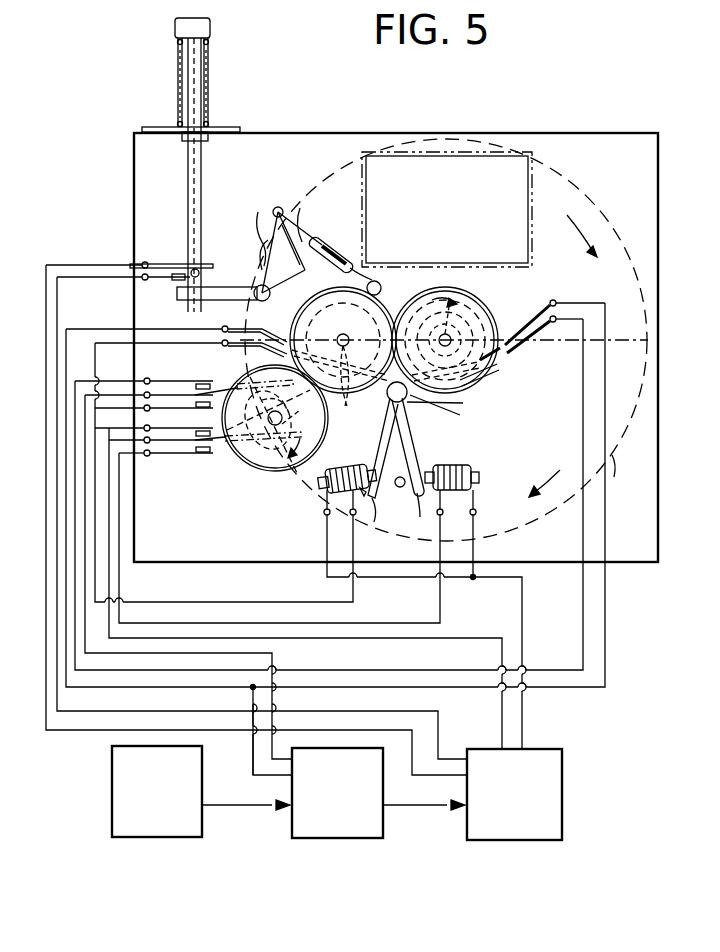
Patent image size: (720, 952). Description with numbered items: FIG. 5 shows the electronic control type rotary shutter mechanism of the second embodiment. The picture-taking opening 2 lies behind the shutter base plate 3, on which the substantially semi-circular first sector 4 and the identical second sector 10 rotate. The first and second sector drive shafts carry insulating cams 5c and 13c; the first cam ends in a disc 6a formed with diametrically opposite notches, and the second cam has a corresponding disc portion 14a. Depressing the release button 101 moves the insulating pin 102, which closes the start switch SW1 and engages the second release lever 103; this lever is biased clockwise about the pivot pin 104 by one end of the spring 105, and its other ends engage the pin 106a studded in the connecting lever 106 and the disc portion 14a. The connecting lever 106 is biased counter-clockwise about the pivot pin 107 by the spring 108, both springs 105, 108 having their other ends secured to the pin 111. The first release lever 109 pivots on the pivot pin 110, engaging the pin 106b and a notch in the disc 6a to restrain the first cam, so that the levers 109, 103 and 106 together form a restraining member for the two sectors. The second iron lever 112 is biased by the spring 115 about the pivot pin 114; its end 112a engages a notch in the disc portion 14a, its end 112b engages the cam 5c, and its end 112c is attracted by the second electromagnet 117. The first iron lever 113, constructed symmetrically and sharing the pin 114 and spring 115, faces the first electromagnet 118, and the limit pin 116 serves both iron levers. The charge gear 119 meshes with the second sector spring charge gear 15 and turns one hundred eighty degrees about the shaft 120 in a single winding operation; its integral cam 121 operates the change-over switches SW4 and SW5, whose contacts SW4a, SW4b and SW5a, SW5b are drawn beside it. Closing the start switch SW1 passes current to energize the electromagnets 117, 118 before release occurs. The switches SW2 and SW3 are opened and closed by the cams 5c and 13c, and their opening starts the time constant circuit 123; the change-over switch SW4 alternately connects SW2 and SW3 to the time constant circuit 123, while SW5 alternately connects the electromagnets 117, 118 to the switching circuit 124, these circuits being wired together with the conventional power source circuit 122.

The picture-taking opening 2 is at (448, 160).
The shutter base plate 3 is at (580, 148).
The first sector 4 is at (575, 198).
The insulating cam 5c is at (485, 330).
The disc 6a is at (448, 330).
The second sector 10 is at (616, 480).
The insulating cam 13c is at (385, 290).
The disc portion 14a is at (262, 302).
The second sector spring charge gear 15 is at (292, 428).
The release button 101 is at (175, 29).
The insulating pin 102 is at (189, 212).
The second release lever 103 is at (177, 292).
The pivot pin 104 is at (206, 266).
The spring 105 is at (268, 244).
The connecting lever 106 is at (265, 215).
The pin 106a is at (262, 253).
The pin 106b is at (302, 238).
The pivot pin 107 is at (277, 207).
The spring 108 is at (285, 208).
The first release lever 109 is at (335, 260).
The pivot pin 110 is at (374, 280).
The pin 111 is at (292, 260).
The second iron lever 112 is at (412, 428).
The end of second iron lever 112a is at (384, 430).
The end of second iron lever 112b is at (486, 376).
The end of second iron lever 112c is at (377, 512).
The first iron lever 113 is at (421, 515).
The pivot pin 114 is at (452, 402).
The spring 115 is at (446, 412).
The limit pin 116 is at (405, 478).
The second electromagnet 117 is at (322, 480).
The first electromagnet 118 is at (472, 478).
The charge gear 119 is at (264, 466).
The shaft 120 is at (268, 420).
The cam 121 is at (285, 412).
The power source circuit 122 is at (152, 838).
The time constant circuit 123 is at (332, 838).
The switching circuit 124 is at (510, 840).
The start switch SW1 is at (166, 264).
The time constant circuit start switch SW2 is at (536, 314).
The time constant circuit start switch SW3 is at (222, 332).
The change-over switch SW4 is at (142, 379).
The switch contact SW4a is at (200, 380).
The switch contact SW4b is at (237, 378).
The change-over switch SW5 is at (152, 460).
The switch contact SW5a is at (176, 444).
The switch contact SW5b is at (214, 456).